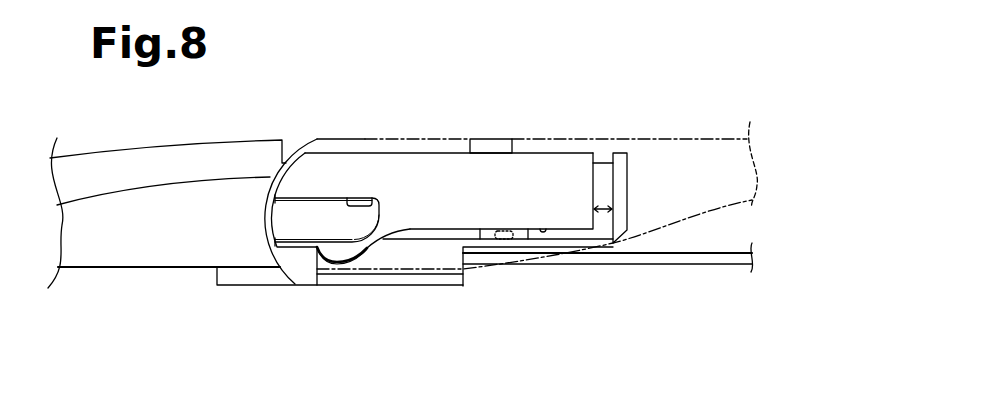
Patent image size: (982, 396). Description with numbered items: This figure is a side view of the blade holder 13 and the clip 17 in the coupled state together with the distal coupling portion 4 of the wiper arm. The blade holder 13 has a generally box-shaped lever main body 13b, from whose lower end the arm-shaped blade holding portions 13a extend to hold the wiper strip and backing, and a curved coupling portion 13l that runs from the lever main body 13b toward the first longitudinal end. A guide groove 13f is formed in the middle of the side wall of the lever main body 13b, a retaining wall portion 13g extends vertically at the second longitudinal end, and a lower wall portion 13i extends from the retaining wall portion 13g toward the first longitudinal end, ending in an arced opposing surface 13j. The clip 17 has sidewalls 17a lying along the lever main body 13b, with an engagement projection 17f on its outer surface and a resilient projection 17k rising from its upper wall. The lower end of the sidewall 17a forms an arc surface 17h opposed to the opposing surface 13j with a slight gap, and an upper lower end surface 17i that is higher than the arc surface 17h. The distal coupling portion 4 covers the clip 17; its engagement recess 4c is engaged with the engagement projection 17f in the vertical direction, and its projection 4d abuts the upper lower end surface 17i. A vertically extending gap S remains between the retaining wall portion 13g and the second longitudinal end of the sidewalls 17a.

The blade holder 13 is at (233, 140).
The curved coupling portion 13l is at (100, 158).
The blade holding portions 13a is at (430, 286).
The clip 17 is at (580, 152).
The sidewalls 17a is at (447, 165).
The resilient projection 17k is at (498, 138).
The distal coupling portion 4 is at (560, 138).
The engagement projections 17f is at (328, 198).
The engagement recess 4c is at (357, 205).
The arc surfaces 17h is at (337, 263).
The opposing surfaces 13j is at (352, 254).
The guide grooves 13f is at (480, 229).
The projections 4d is at (505, 229).
The upper lower end surfaces 17i is at (545, 228).
The gap S is at (597, 208).
The lever main body 13b is at (603, 165).
The retaining wall portions 13g is at (628, 178).
The lower wall portions 13i is at (538, 245).